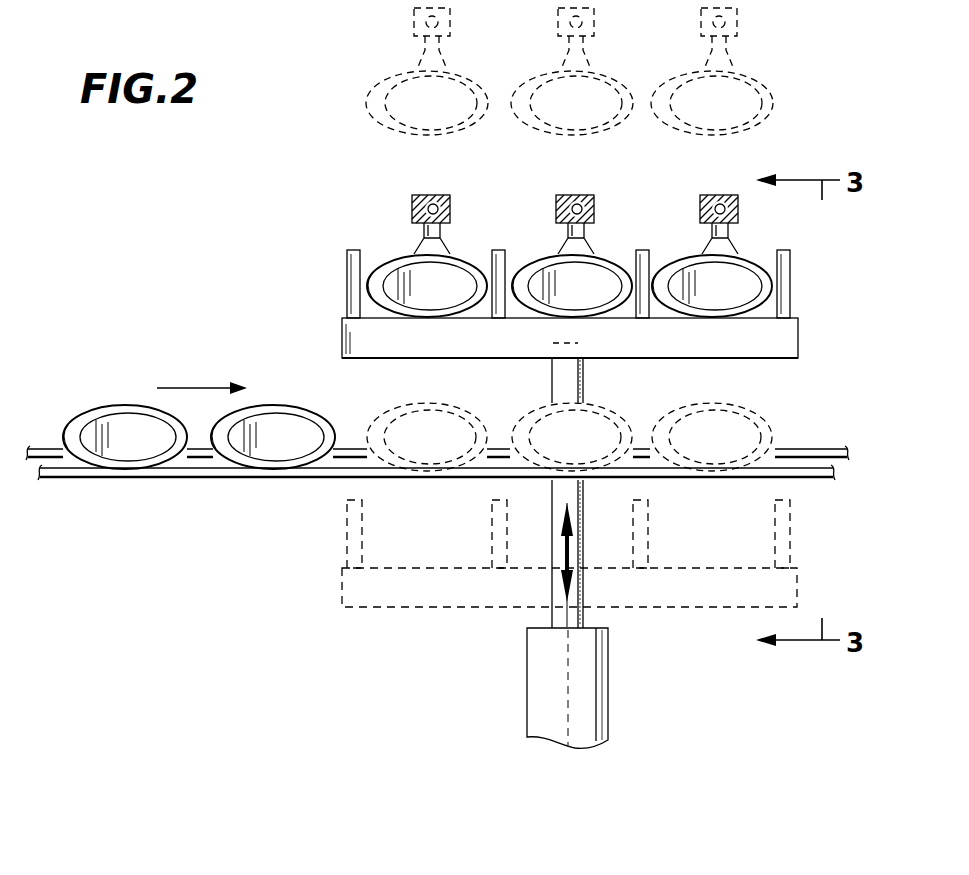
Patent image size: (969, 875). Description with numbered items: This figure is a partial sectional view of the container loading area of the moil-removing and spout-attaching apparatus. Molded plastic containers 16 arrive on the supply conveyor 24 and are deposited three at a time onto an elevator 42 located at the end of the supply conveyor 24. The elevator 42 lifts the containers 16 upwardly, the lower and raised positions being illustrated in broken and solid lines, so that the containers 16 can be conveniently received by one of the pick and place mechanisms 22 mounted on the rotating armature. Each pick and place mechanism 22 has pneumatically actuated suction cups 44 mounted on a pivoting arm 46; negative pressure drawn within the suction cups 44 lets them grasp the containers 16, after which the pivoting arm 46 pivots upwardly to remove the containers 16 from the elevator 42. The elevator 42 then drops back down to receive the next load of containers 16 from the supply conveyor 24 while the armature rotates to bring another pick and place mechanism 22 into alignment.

The molded plastic container 16 is at (394, 258).
The pick and place mechanism 22 is at (704, 195).
The supply conveyor 24 is at (172, 477).
The elevator 42 is at (346, 334).
The suction cup 44 is at (728, 250).
The pivoting arm 46 is at (700, 205).